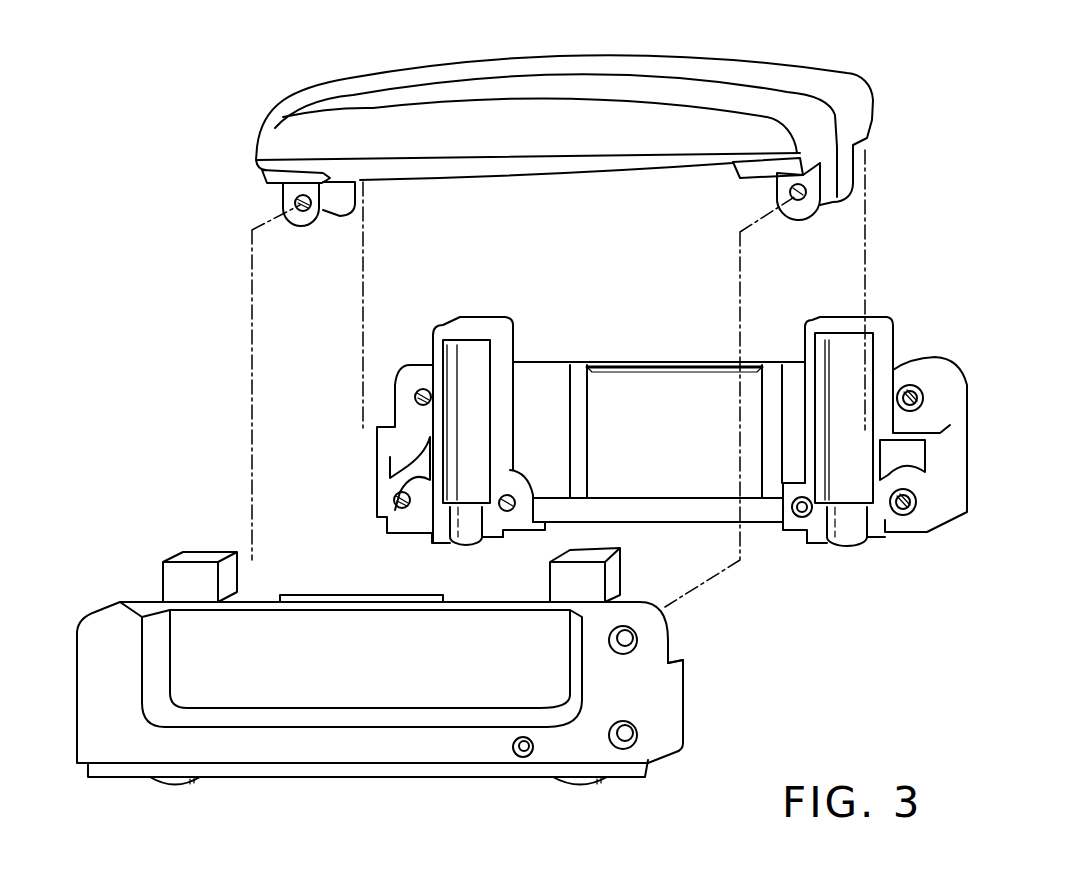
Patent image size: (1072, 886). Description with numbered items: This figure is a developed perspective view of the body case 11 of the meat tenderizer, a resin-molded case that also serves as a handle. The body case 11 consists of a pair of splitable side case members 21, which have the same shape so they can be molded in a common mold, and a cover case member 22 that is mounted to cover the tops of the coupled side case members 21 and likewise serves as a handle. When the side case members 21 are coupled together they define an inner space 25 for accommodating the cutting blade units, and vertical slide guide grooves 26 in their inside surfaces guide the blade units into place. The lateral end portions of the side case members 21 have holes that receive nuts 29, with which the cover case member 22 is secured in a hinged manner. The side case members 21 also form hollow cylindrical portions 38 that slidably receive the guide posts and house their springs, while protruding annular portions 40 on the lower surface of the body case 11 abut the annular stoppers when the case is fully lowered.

The main body case 11 is at (973, 130).
The side case members 21 is at (970, 447).
The cover case member 22 is at (857, 83).
The inner space 25 is at (645, 437).
The slide guide grooves 26 is at (770, 370).
The nuts 29 is at (923, 397).
The hollow cylindrical portions 38 is at (473, 365).
The annular portions 40 is at (487, 543).